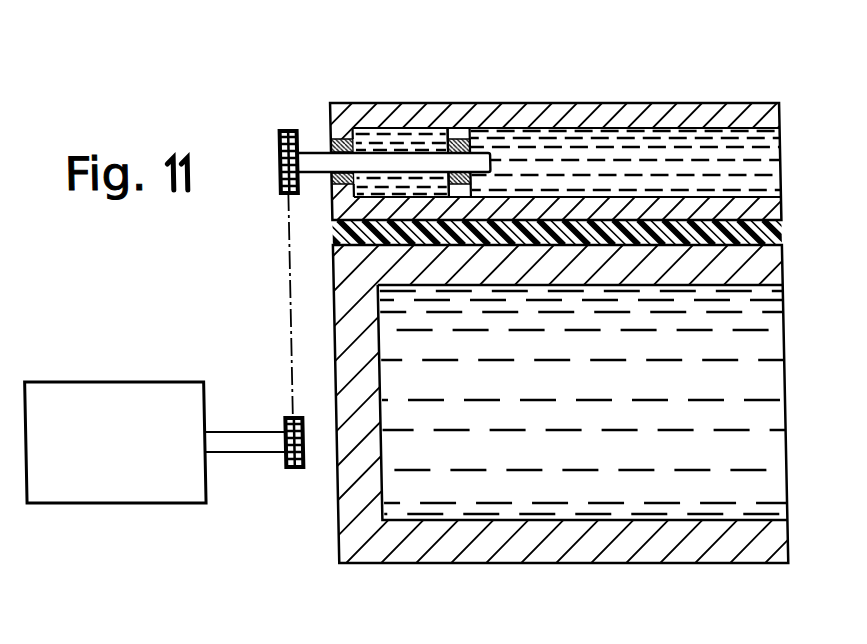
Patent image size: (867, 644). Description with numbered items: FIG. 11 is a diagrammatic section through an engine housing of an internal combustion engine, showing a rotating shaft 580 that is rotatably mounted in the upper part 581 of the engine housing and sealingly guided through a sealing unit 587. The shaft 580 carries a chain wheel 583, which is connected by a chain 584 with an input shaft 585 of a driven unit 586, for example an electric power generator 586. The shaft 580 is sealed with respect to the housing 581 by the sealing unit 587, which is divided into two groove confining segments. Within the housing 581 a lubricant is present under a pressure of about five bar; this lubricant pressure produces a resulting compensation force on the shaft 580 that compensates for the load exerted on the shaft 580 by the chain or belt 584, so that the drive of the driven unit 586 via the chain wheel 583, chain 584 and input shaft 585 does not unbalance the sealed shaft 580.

The shaft 580 is at (423, 160).
The upper part of the engine housing 581 is at (655, 117).
The chain wheel 583 is at (277, 146).
The chain 584 is at (284, 255).
The input shaft 585 is at (258, 445).
The driven unit 586 is at (118, 400).
The sealing unit 587 is at (346, 118).
The drive device D is at (368, 74).